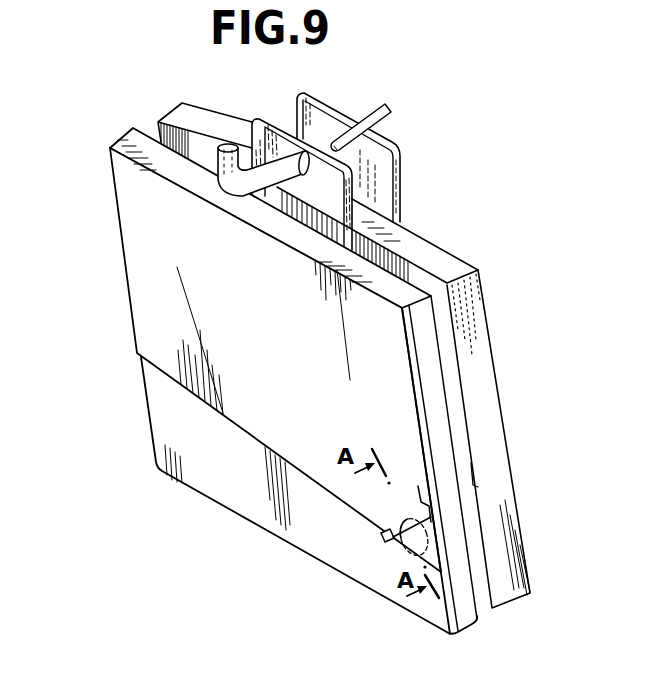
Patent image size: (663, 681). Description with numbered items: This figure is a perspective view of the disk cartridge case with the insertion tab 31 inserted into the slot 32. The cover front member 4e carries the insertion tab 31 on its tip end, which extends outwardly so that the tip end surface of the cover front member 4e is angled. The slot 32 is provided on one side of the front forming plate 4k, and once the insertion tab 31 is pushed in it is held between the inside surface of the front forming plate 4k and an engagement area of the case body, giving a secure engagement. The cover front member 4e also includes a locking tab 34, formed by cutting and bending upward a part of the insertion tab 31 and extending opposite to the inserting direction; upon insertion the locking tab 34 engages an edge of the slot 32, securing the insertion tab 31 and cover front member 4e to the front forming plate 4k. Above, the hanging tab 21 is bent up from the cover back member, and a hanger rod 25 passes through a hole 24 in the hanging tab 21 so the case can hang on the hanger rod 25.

The cover front member 4e is at (143, 255).
The front forming plate 4k is at (162, 408).
The hanging tab 21 is at (257, 127).
The hole 24 is at (291, 141).
The hanger rod 25 is at (388, 110).
The insertion tab 31 is at (398, 550).
The slot 32 is at (383, 539).
The locking tab 34 is at (408, 520).